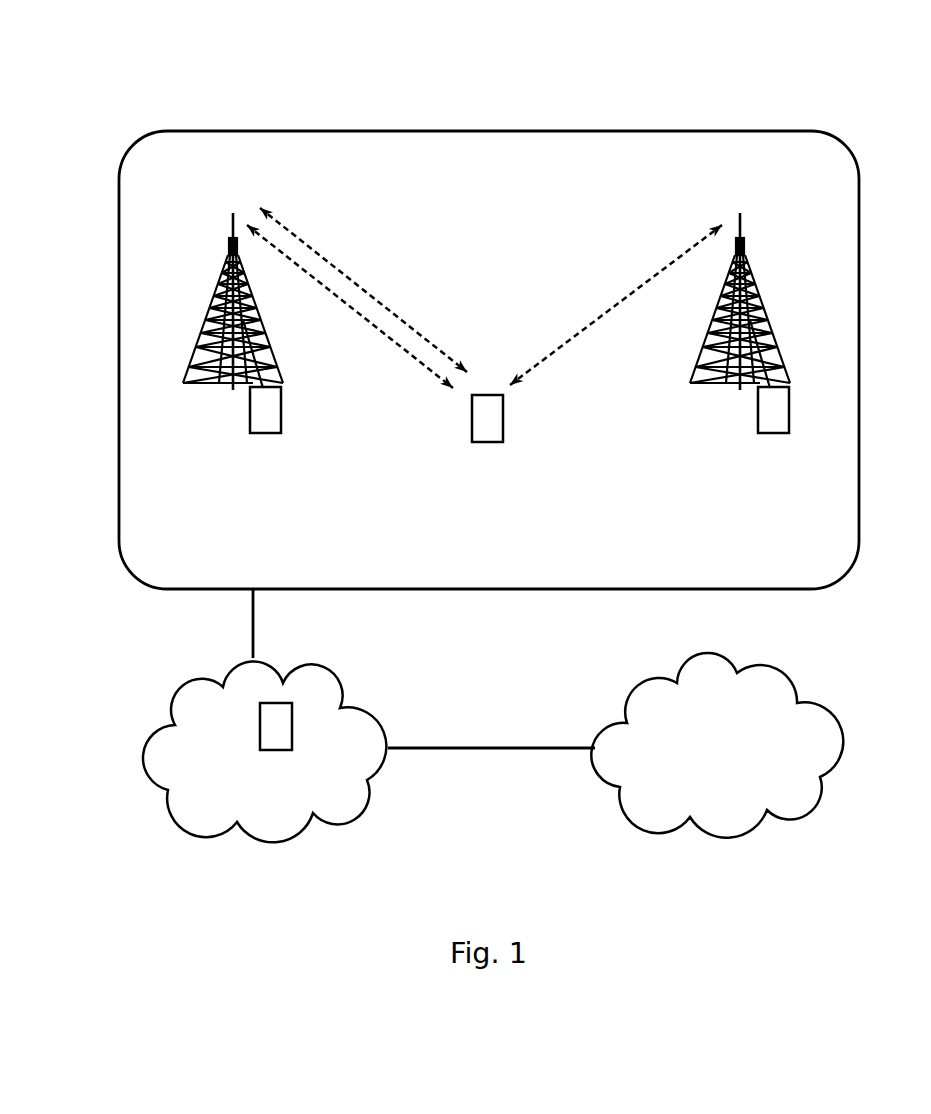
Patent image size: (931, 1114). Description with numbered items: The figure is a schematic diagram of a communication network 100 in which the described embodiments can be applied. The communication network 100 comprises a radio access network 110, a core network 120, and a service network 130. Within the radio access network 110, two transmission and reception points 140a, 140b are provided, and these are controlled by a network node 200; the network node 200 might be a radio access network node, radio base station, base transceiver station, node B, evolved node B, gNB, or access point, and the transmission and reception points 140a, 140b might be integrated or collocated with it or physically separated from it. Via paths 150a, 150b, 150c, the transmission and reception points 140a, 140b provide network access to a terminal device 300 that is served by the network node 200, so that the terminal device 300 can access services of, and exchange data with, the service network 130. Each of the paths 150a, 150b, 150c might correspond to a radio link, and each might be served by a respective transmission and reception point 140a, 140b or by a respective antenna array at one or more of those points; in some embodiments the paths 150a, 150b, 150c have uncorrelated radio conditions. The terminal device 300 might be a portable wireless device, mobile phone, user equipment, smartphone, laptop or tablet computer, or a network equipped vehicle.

The communication network 100 is at (206, 73).
The radio access network 110 is at (119, 412).
The core network 120 is at (237, 726).
The service network 130 is at (747, 767).
The transmission and reception point 140a is at (233, 224).
The transmission and reception point 140b is at (741, 228).
The path 150a is at (300, 268).
The path 150b is at (362, 291).
The path 150c is at (610, 309).
The network node 200 is at (265, 433).
The terminal device 300 is at (490, 442).